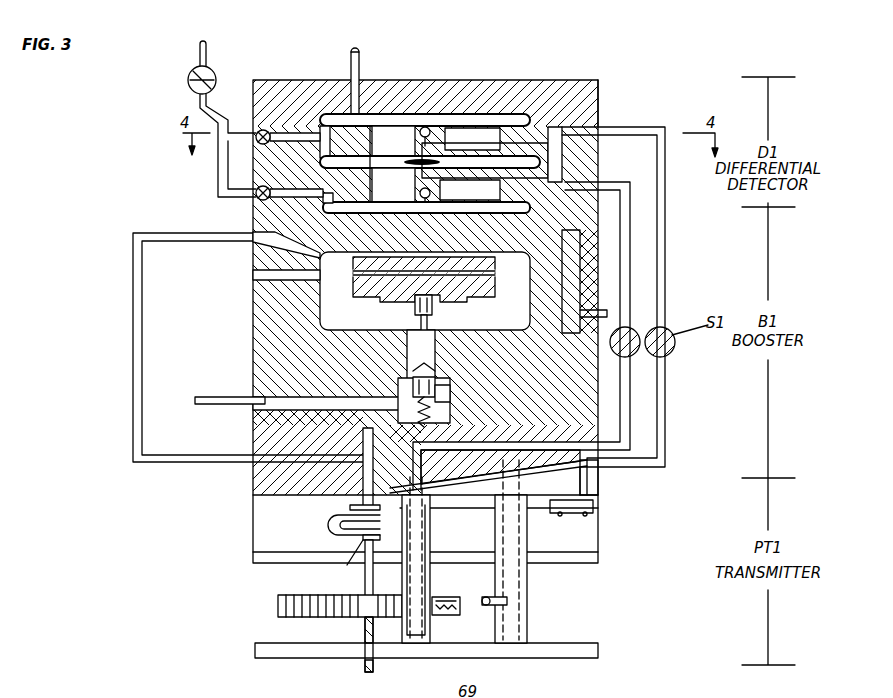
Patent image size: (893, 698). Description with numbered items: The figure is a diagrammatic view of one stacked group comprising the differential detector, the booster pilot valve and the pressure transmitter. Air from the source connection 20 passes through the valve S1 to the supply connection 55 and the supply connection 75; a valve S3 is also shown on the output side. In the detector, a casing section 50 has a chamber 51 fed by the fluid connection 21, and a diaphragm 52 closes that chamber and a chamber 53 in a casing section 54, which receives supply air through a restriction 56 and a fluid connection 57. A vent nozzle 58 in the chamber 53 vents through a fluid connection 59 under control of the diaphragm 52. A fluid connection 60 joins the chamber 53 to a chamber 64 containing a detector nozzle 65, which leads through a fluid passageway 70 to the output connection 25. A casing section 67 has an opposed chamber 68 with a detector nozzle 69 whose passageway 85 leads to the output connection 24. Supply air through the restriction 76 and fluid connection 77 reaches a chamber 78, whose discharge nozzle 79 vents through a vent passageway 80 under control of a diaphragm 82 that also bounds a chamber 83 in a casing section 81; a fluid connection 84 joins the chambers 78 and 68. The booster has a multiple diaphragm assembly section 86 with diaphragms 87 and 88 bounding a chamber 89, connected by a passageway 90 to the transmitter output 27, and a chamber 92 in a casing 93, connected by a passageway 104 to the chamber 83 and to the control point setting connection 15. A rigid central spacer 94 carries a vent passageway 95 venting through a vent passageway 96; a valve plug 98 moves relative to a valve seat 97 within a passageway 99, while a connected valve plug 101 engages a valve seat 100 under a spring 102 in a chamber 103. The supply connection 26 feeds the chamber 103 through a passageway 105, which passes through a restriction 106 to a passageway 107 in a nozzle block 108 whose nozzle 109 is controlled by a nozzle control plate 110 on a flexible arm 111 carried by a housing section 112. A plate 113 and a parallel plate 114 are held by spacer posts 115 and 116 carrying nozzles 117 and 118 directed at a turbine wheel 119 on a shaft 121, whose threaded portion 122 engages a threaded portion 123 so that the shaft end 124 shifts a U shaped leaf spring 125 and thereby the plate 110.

The control point setting connection 15 is at (607, 313).
The fluid connection to pressure source 20 is at (207, 52).
The fluid connection 21 is at (362, 62).
The directional output connection 24 is at (632, 390).
The directional output connection 25 is at (667, 160).
The pressure fluid supply connection 26 is at (240, 398).
The fluid delivery connection 27 is at (133, 352).
The casing section 50 is at (598, 103).
The chamber 51 is at (548, 88).
The diaphragm 52 is at (485, 115).
The chamber 53 is at (505, 120).
The casing section 54 is at (255, 115).
The supply fluid connection 55 is at (240, 148).
The restriction 56 is at (266, 130).
The fluid connection 57 is at (300, 120).
The vent nozzle 58 is at (418, 122).
The fluid connection 59 is at (432, 134).
The fluid connection 60 is at (401, 141).
The chamber 64 is at (349, 145).
The detector nozzle 65 is at (410, 162).
The casing section 67 is at (632, 193).
The chamber 68 is at (598, 160).
The detector nozzle 69 is at (392, 166).
The fluid passageway 70 is at (565, 103).
The supply connection 75 is at (238, 193).
The restriction 76 is at (258, 200).
The fluid connection 77 is at (296, 184).
The chamber 78 is at (345, 215).
The discharge nozzle 79 is at (445, 214).
The vent passageway 80 is at (432, 193).
The casing section 81 is at (598, 243).
The diaphragm 82 is at (388, 215).
The chamber 83 is at (422, 215).
The fluid connection 84 is at (406, 194).
The fluid passageway 85 is at (535, 195).
The multiple diaphragm assembly section 86 is at (253, 290).
The diaphragm 87 is at (336, 277).
The diaphragm 88 is at (335, 315).
The chamber 89 is at (509, 277).
The passageway 90 is at (322, 228).
The chamber 92 is at (478, 342).
The casing 93 is at (262, 352).
The rigid central spacer 94 is at (377, 320).
The vent passageway 95 is at (482, 300).
The vent passageway 96 is at (253, 273).
The valve seat 97 is at (428, 310).
The valve plug 98 is at (415, 312).
The passageway 99 is at (410, 345).
The valve seat 100 is at (437, 385).
The valve plug 101 is at (450, 396).
The spring 102 is at (432, 410).
The chamber 103 is at (375, 385).
The passageway 104 is at (575, 270).
The passageway 105 is at (290, 397).
The restriction 106 is at (355, 430).
The passageway 107 is at (360, 470).
The nozzle block 108 is at (348, 497).
The nozzle 109 is at (342, 513).
The nozzle control plate 110 is at (455, 520).
The flexible arm 111 is at (555, 513).
The housing section 112 is at (255, 480).
The plate 113 is at (598, 565).
The plate 114 is at (598, 650).
The spacer post 115 is at (430, 580).
The spacer post 116 is at (527, 612).
The nozzle 117 is at (446, 615).
The nozzle 118 is at (505, 600).
The turbine wheel 119 is at (283, 620).
The shaft 121 is at (365, 580).
The threaded portion 122 is at (363, 630).
The threaded portion 123 is at (363, 656).
The end of shaft 124 is at (337, 561).
The U shaped leaf spring 125 is at (330, 536).
The valve S1 is at (188, 90).
The valve S3 is at (636, 332).